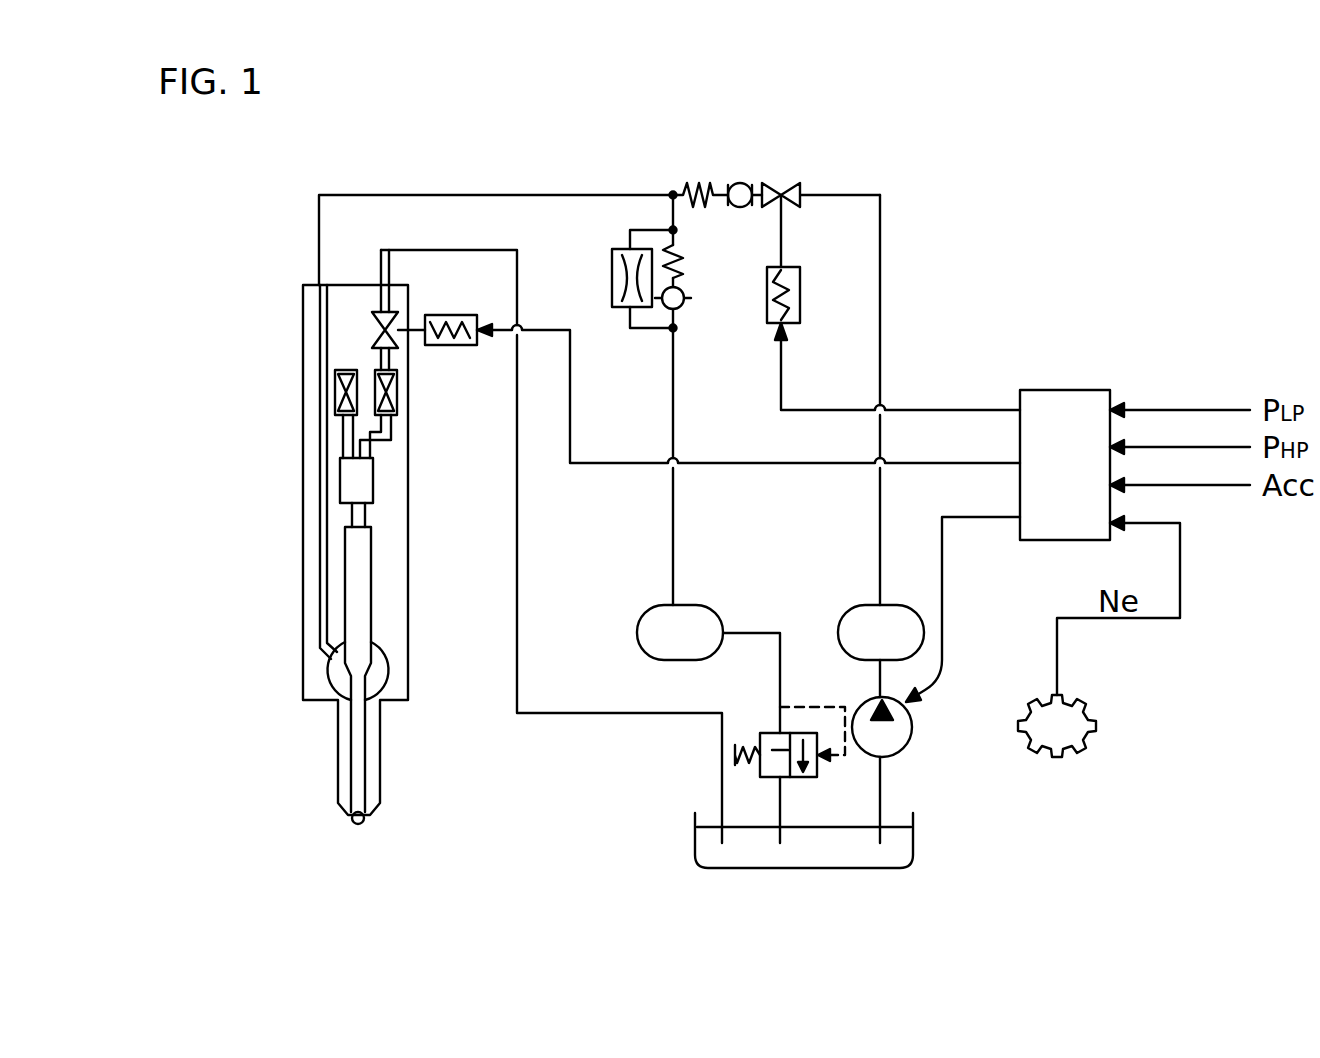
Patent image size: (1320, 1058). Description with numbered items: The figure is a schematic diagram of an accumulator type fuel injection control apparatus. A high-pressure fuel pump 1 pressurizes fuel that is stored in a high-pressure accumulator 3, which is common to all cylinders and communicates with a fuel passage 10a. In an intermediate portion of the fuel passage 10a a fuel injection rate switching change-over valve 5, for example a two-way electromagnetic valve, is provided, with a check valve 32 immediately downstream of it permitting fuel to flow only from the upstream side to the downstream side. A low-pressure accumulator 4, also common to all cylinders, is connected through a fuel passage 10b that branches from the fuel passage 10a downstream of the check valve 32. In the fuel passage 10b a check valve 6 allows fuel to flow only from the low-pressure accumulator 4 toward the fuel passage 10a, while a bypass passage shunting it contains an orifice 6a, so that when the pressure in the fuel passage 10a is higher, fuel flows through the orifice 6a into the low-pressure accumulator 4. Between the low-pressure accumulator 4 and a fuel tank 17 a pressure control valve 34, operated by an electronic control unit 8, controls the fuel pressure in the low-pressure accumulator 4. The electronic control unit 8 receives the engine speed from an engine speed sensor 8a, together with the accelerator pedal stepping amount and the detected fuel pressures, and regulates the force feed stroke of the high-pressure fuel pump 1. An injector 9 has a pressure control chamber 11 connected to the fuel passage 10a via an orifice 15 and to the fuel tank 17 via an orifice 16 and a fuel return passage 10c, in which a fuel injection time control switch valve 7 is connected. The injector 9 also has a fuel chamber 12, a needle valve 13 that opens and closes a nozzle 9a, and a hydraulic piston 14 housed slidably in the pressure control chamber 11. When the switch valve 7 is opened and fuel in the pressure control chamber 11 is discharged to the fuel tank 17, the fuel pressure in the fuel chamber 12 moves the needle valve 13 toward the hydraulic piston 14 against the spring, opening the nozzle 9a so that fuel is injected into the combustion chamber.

The high-pressure fuel pump 1 is at (908, 752).
The high-pressure accumulator 3 is at (856, 605).
The low-pressure accumulator 4 is at (660, 605).
The fuel injection rate switching change-over valve 5 is at (786, 176).
The check valve 6 is at (690, 269).
The orifice 6a is at (612, 284).
The fuel injection time control switch valve 7 is at (396, 326).
The electronic control unit 8 is at (1060, 390).
The engine speed sensor 8a is at (1088, 724).
The injector 9 is at (303, 489).
The nozzle 9a is at (366, 823).
The fuel passage 10a is at (563, 195).
The fuel passage 10b is at (680, 383).
The fuel return passage 10c is at (520, 640).
The pressure control chamber 11 is at (362, 474).
The fuel chamber 12 is at (380, 674).
The needle valve 13 is at (362, 636).
The hydraulic piston 14 is at (366, 498).
The orifice 15 is at (346, 370).
The orifice 16 is at (398, 386).
The fuel tank 17 is at (838, 868).
The check valve 32 is at (690, 183).
The pressure control valve 34 is at (760, 733).